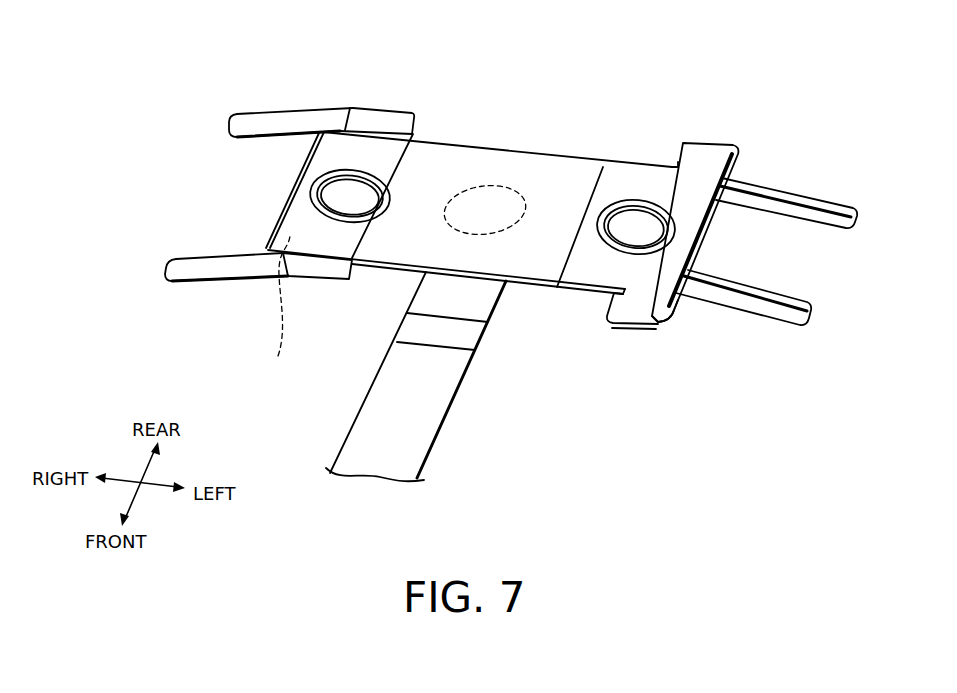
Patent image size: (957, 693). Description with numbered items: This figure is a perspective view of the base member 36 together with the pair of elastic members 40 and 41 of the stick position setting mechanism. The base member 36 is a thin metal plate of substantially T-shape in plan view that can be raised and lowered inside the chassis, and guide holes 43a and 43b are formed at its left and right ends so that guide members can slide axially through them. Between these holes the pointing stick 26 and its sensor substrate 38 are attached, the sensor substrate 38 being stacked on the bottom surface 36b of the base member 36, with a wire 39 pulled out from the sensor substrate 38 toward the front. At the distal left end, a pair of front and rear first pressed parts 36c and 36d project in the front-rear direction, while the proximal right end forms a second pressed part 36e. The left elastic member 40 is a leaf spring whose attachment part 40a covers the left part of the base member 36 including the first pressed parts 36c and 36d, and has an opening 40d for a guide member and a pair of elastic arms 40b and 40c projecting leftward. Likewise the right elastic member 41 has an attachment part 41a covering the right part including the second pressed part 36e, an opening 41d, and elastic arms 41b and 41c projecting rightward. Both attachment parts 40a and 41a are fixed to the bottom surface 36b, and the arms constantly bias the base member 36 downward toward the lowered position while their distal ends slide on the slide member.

The pointing stick 26 is at (503, 229).
The base member 36 is at (445, 177).
The sensor substrate 38 is at (458, 163).
The bottom surface of the base member 36b is at (543, 170).
The first pressed part 36c is at (632, 324).
The first pressed part 36d is at (677, 152).
The second pressed part 36e is at (278, 312).
The wire 39 is at (416, 425).
The elastic member 40 is at (706, 132).
The attachment part 40a is at (643, 273).
The elastic arm 40b is at (779, 310).
The elastic arm 40c is at (820, 207).
The opening 40d is at (632, 225).
The elastic member 41 is at (377, 103).
The attachment part 41a is at (327, 237).
The elastic arm 41b is at (196, 282).
The elastic arm 41c is at (265, 114).
The opening 41d is at (340, 197).
The guide hole 43a is at (645, 217).
The guide hole 43b is at (341, 197).